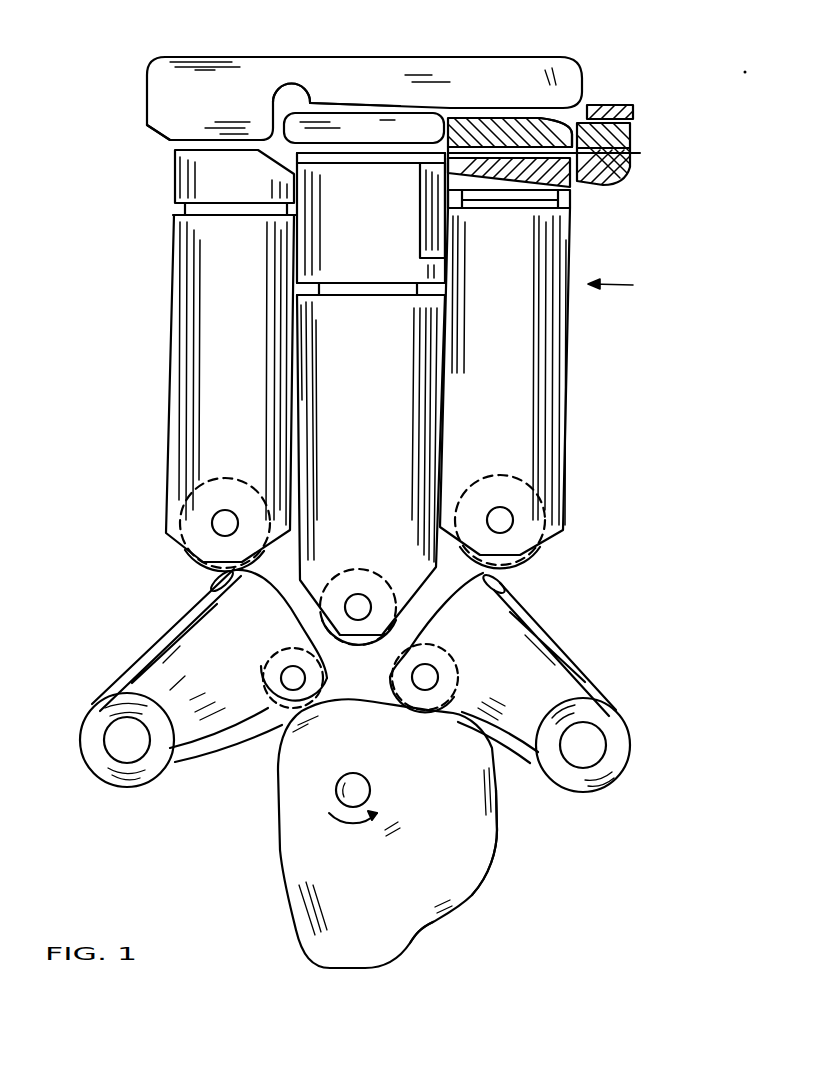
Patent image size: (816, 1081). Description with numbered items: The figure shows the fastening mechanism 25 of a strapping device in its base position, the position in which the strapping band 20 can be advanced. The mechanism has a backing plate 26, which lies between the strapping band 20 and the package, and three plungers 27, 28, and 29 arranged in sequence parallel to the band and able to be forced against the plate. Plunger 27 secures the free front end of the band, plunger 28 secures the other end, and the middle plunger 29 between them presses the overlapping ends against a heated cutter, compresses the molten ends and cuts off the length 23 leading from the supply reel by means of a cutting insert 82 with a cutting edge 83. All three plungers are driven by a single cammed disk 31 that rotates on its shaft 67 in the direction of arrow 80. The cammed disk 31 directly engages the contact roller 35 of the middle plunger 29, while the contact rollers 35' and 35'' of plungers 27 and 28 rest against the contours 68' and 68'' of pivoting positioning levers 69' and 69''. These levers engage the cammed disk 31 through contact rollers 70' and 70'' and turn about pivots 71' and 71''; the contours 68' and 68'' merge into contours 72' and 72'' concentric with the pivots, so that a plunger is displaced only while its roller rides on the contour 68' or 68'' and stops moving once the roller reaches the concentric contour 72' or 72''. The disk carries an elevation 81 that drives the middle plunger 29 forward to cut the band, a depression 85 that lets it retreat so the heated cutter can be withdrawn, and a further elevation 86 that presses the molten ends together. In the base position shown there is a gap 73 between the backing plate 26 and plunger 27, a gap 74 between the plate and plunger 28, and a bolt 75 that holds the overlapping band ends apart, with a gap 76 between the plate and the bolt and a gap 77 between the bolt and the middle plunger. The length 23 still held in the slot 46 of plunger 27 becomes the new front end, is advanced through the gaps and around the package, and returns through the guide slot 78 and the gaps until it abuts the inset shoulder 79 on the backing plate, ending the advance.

The strapping band 20 is at (631, 157).
The length of band leading from the supply reel 23 is at (510, 147).
The fastening mechanism 25 is at (623, 282).
The backing plate 26 is at (333, 80).
The plunger 27 is at (543, 360).
The plunger 28 is at (180, 376).
The middle plunger 29 is at (400, 442).
The cammed disk 31 is at (278, 772).
The contact roller 35 is at (358, 619).
The contact roller 35' is at (522, 521).
The contact roller 35'' is at (201, 524).
The slot 46 is at (570, 146).
The shaft 67 is at (360, 787).
The contour 68' is at (521, 586).
The contour 68'' is at (197, 581).
The pivoting positioning lever 69' is at (555, 649).
The pivoting positioning lever 69'' is at (166, 640).
The contact roller 70' is at (403, 678).
The contact roller 70'' is at (281, 697).
The pivot 71' is at (599, 745).
The pivot 71'' is at (121, 742).
The contour 72' is at (464, 652).
The contour 72'' is at (248, 666).
The gap 73 is at (465, 110).
The gap 74 is at (180, 140).
The bolt 75 is at (360, 127).
The gap 76 is at (317, 106).
The gap 77 is at (388, 151).
The guide slot 78 is at (630, 113).
The inset shoulder 79 is at (263, 115).
The arrow 80 is at (340, 830).
The elevation 81 is at (483, 847).
The cutting insert 82 is at (433, 217).
The cutting edge 83 is at (433, 168).
The depression 85 is at (423, 928).
The elevation 86 is at (357, 950).